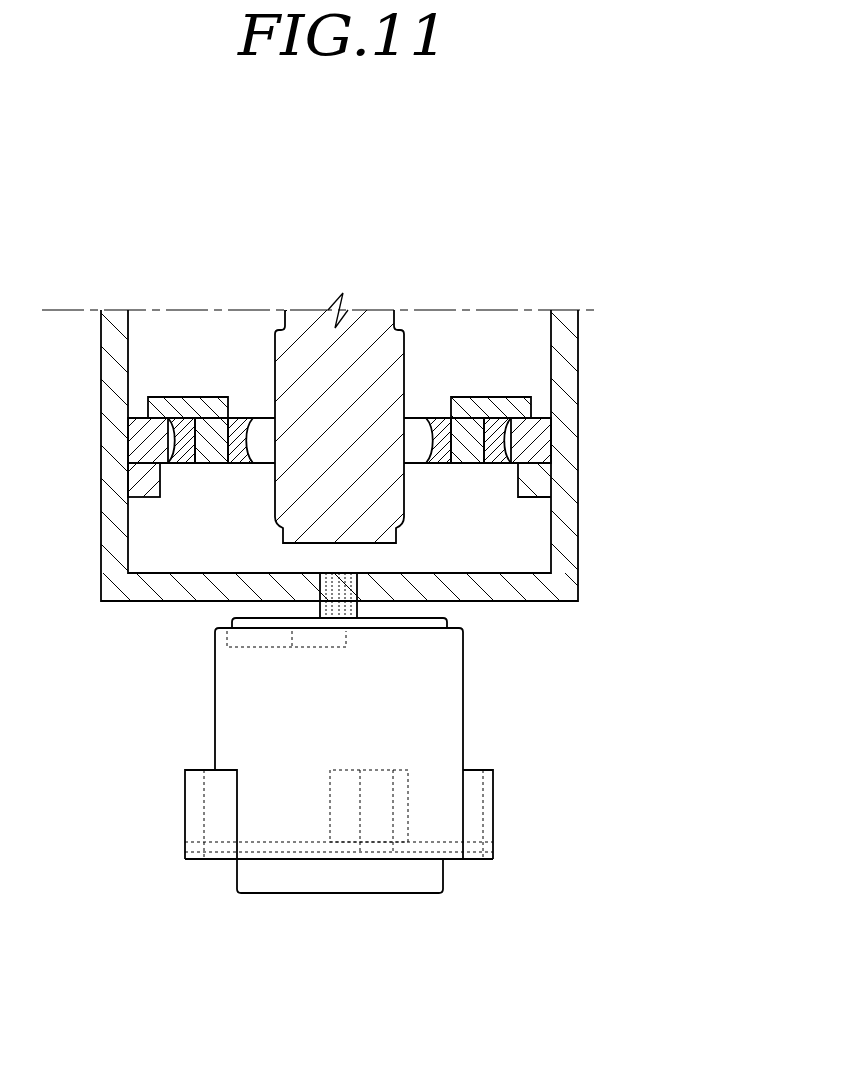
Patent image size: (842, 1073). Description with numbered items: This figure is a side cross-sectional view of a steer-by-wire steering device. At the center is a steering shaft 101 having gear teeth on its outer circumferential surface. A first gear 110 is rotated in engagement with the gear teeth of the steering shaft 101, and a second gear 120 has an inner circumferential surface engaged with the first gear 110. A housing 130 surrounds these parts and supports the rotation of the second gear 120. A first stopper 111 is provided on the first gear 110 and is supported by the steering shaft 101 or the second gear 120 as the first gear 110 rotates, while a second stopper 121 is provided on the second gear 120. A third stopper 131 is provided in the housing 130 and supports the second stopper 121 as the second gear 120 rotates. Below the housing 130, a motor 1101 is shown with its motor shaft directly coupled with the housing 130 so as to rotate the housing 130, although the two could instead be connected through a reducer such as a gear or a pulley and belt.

The steering shaft 101 is at (371, 322).
The first gear 110 is at (239, 420).
The first stopper 111 is at (187, 408).
The second gear 120 is at (140, 437).
The second stopper 121 is at (135, 478).
The housing 130 is at (565, 377).
The third stopper 131 is at (534, 487).
The motor 1101 is at (440, 698).